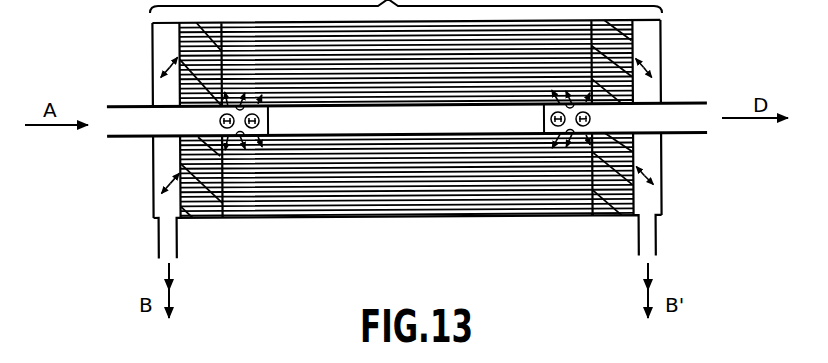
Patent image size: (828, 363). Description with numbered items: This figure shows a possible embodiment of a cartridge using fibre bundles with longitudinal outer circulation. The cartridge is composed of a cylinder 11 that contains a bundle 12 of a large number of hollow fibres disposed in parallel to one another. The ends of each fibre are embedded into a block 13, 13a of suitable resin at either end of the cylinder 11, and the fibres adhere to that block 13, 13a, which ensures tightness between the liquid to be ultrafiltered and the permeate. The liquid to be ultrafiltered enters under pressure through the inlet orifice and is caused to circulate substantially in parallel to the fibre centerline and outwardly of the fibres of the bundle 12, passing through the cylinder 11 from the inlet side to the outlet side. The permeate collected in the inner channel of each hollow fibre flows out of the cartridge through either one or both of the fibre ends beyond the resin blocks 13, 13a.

The cylinder 11 is at (305, 218).
The bundle of hollow fibres 12 is at (497, 173).
The resin block 13 is at (180, 50).
The resin block 13a is at (633, 41).